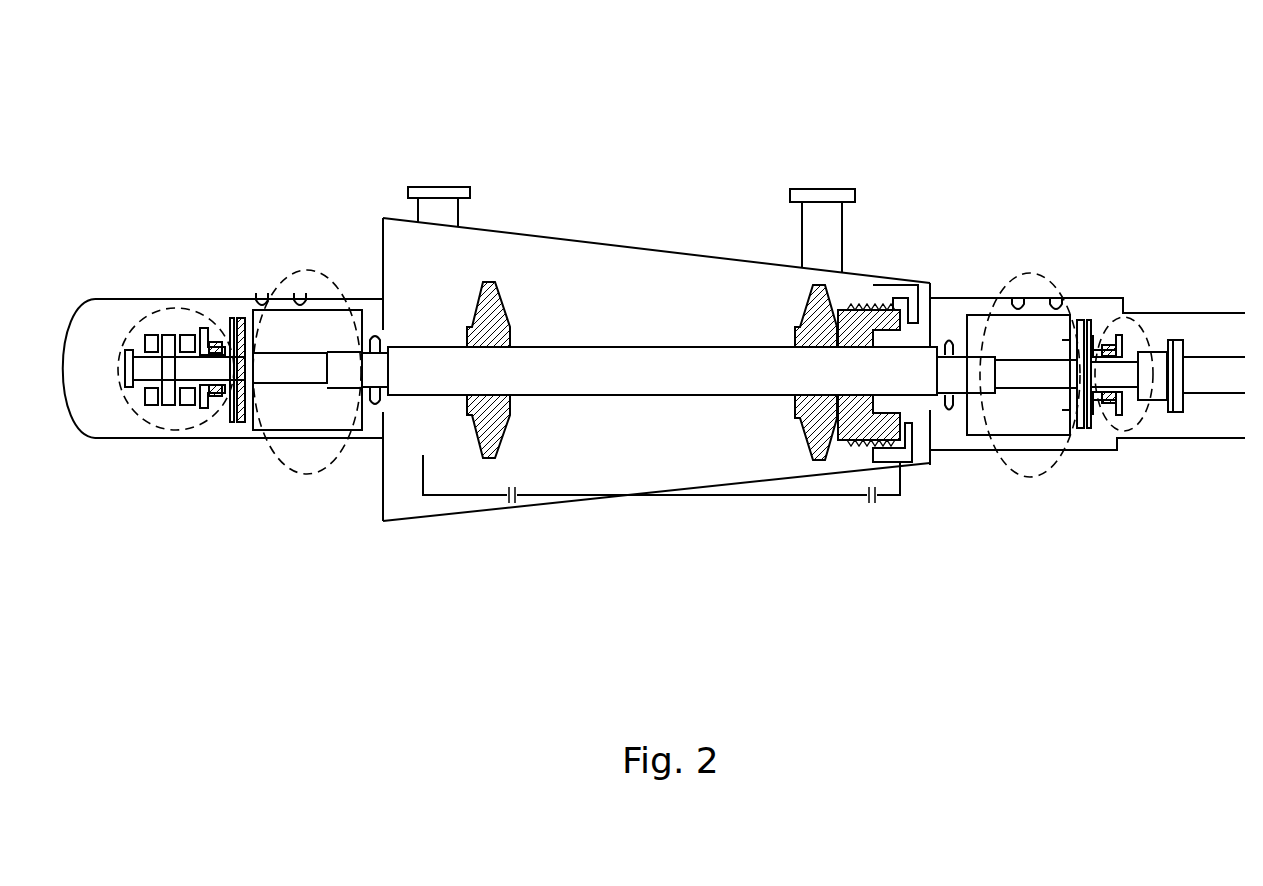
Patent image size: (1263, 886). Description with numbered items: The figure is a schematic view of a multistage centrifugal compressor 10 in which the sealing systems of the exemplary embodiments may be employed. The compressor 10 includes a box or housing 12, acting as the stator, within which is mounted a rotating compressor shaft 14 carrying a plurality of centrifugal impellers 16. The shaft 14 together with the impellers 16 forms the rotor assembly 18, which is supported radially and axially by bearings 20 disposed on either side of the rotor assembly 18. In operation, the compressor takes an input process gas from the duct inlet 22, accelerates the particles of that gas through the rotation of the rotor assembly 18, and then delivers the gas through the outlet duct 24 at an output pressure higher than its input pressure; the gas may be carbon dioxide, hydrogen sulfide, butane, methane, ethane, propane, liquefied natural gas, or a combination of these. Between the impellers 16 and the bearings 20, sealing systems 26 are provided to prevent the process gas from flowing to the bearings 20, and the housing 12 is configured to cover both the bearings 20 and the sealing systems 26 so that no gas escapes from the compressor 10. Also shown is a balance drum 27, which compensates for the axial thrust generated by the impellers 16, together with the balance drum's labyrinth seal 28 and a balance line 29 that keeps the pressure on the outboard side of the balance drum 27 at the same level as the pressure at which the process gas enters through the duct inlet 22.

The multistage centrifugal compressor 10 is at (485, 74).
The housing 12 is at (634, 248).
The compressor shaft 14 is at (930, 345).
The centrifugal impellers 16 is at (490, 462).
The rotor assembly 18 is at (650, 385).
The bearings 20 is at (167, 306).
The duct inlet 22 is at (425, 186).
The outlet duct 24 is at (818, 189).
The sealing systems 26 is at (295, 270).
The balance drum 27 is at (877, 423).
The labyrinth seal 28 is at (860, 310).
The balance line 29 is at (745, 498).